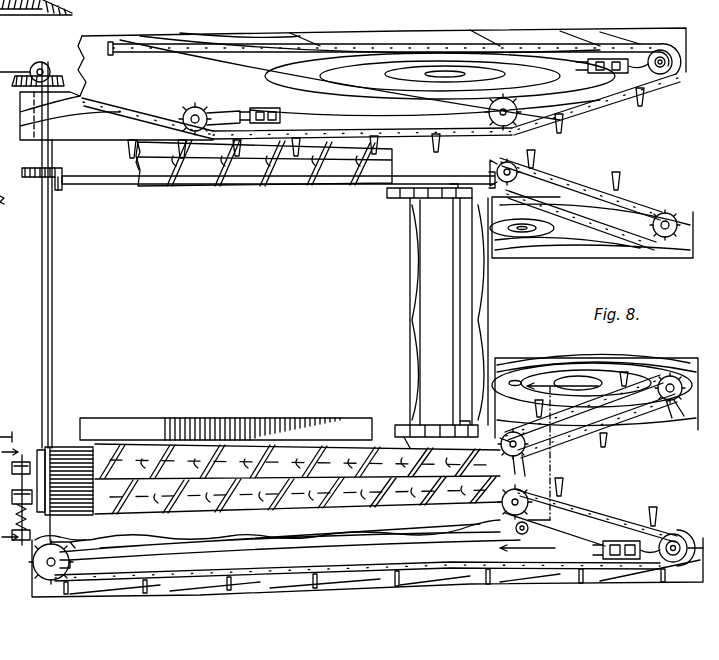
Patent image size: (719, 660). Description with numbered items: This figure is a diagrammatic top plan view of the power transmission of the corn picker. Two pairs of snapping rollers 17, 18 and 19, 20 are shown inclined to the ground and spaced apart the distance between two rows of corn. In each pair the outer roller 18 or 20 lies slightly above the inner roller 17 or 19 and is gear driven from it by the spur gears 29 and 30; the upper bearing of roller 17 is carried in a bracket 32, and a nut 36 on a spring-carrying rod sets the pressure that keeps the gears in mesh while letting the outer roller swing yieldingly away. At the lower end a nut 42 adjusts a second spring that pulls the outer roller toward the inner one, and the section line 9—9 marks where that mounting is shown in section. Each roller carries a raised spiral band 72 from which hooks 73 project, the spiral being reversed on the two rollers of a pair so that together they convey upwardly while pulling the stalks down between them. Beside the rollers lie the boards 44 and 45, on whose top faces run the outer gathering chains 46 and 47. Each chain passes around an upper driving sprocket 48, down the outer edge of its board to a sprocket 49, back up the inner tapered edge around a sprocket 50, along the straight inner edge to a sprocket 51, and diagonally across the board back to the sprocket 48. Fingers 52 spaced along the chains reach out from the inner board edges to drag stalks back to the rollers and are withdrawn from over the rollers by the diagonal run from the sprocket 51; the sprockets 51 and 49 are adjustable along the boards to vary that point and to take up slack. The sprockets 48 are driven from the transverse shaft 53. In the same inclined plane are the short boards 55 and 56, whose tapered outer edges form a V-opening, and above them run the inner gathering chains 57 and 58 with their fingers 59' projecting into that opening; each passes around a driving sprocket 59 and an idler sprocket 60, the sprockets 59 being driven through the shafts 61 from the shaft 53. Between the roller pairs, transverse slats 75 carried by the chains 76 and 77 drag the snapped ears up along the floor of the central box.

The section line 9 is at (300, 467).
The snapping roller 17 is at (116, 442).
The snapping roller 18 is at (145, 505).
The snapping roller 19 is at (197, 190).
The snapping roller 20 is at (135, 150).
The spur gear 29 is at (45, 447).
The spur gear 30 is at (52, 522).
The bracket 32 is at (26, 458).
The nut 36 is at (24, 541).
The nut 42 is at (530, 528).
The board 44 is at (212, 545).
The board 45 is at (425, 127).
The outer gathering chain 46 is at (120, 556).
The outer gathering chain 47 is at (268, 44).
The upper driving sprocket 48 is at (68, 560).
The lower sprocket 49 is at (661, 78).
The sprocket 50 is at (511, 99).
The sprocket 51 is at (200, 108).
The finger 52 is at (314, 40).
The transverse shaft 53 is at (52, 286).
The short board 55 is at (579, 362).
The short board 56 is at (552, 258).
The inner gathering chain 57 is at (638, 428).
The inner gathering chain 58 is at (622, 186).
The driving sprocket 59 is at (537, 307).
The finger 59' is at (588, 304).
The idler sprocket 60 is at (666, 212).
The shaft 61 is at (128, 186).
The spiral band 72 is at (318, 188).
The hook 73 is at (300, 170).
The transverse slat 75 is at (410, 292).
The chain 76 is at (400, 200).
The chain 77 is at (408, 420).